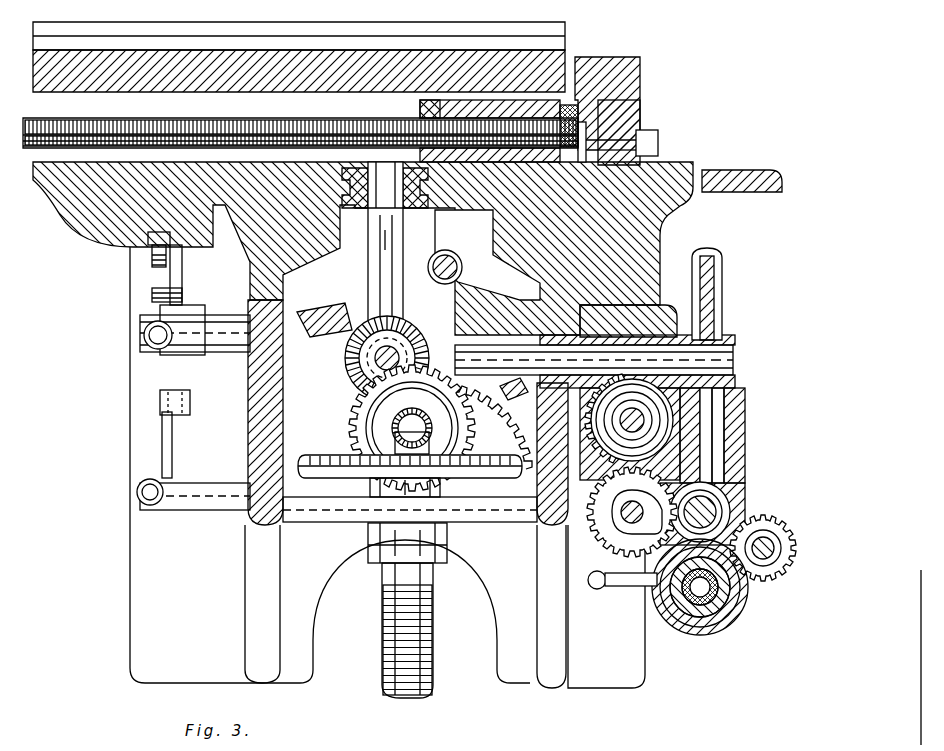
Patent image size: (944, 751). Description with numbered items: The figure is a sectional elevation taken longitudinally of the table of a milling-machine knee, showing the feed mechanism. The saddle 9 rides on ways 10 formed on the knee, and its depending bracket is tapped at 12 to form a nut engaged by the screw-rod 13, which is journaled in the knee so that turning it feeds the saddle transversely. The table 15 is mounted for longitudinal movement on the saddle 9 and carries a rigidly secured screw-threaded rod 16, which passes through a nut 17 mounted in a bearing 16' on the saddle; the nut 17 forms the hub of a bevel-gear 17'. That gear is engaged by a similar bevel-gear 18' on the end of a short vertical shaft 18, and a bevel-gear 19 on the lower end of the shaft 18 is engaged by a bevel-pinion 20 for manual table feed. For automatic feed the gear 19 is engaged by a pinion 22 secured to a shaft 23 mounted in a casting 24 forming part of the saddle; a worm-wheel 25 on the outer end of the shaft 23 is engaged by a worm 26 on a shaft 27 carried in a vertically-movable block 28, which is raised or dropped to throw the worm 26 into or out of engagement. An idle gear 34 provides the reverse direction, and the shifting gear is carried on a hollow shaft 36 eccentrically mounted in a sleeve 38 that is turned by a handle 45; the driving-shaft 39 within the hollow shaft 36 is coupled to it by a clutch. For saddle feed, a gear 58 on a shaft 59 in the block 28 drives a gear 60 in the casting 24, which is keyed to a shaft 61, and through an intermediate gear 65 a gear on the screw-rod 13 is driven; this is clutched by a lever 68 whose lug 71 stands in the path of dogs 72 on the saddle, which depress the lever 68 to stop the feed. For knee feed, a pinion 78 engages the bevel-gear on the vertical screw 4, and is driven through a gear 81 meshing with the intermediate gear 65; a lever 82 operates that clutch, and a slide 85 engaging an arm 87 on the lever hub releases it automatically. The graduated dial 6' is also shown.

The screw 4 is at (390, 612).
The graduated dial 6' is at (410, 476).
The saddle 9 is at (745, 188).
The ways 10 is at (240, 210).
The tapped nut 12 is at (462, 245).
The screw-rod 13 is at (444, 254).
The table 15 is at (440, 62).
The screw-threaded rod 16 is at (300, 124).
The bearing 16' is at (589, 86).
The nut 17 is at (469, 131).
The bevel-gear 17' is at (413, 104).
The vertical shaft 18 is at (385, 247).
The bevel-gear 18' is at (380, 180).
The bevel-gear 19 is at (320, 314).
The bevel-pinion 20 is at (356, 378).
The pinion 22 is at (475, 385).
The shaft 23 is at (735, 360).
The casting 24 is at (665, 312).
The worm-wheel 25 is at (716, 306).
The worm 26 is at (738, 478).
The shaft 27 is at (745, 505).
The block 28 is at (730, 612).
The idle gear 34 is at (770, 580).
The hollow shaft 36 is at (686, 612).
The sleeve 38 is at (700, 620).
The driving-shaft 39 is at (672, 598).
The handle 45 is at (628, 585).
The gear 58 is at (606, 530).
The shaft 59 is at (622, 512).
The gear 60 is at (600, 450).
The shaft 61 is at (610, 470).
The intermediate gear 65 is at (494, 427).
The lever 68 is at (160, 306).
The lug 71 is at (182, 295).
The dogs 72 is at (182, 270).
The pinion 78 is at (392, 436).
The gear 81 is at (352, 414).
The lever 82 is at (150, 505).
The slide 85 is at (190, 401).
The arm 87 is at (172, 447).